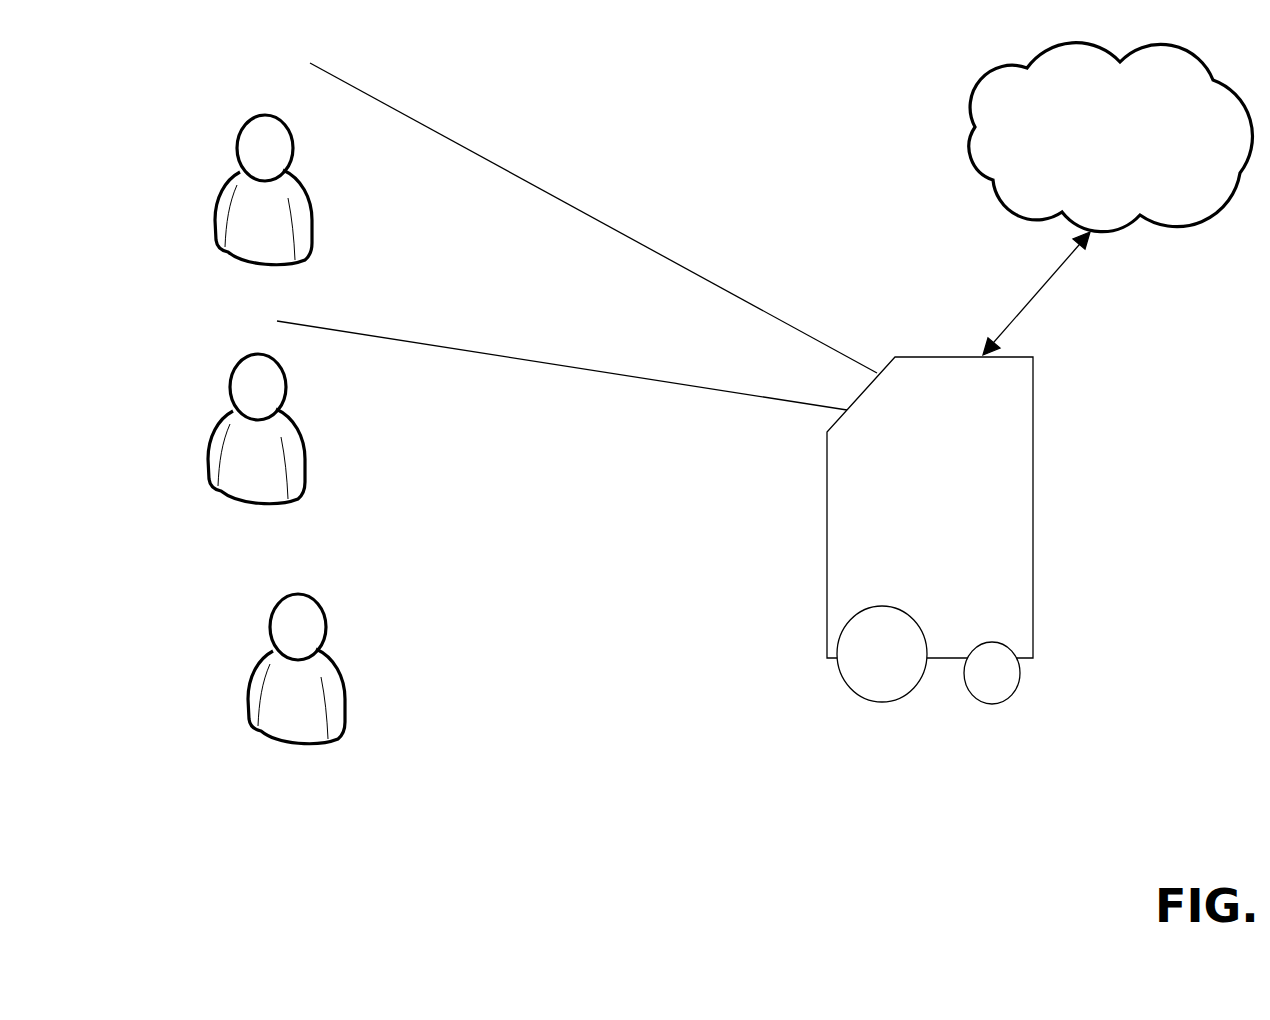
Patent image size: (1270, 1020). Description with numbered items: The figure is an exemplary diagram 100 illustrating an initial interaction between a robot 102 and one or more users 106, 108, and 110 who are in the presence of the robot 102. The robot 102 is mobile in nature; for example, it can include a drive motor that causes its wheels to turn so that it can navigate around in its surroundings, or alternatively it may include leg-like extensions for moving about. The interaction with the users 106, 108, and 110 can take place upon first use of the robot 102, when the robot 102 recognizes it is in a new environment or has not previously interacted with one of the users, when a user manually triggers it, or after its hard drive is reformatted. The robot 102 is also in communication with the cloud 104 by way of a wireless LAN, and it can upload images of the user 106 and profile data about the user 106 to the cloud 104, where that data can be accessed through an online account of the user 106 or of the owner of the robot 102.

The diagram 100 is at (746, 138).
The robot 102 is at (827, 550).
The cloud 104 is at (973, 95).
The user 106 is at (237, 138).
The user 108 is at (234, 370).
The user 110 is at (270, 612).